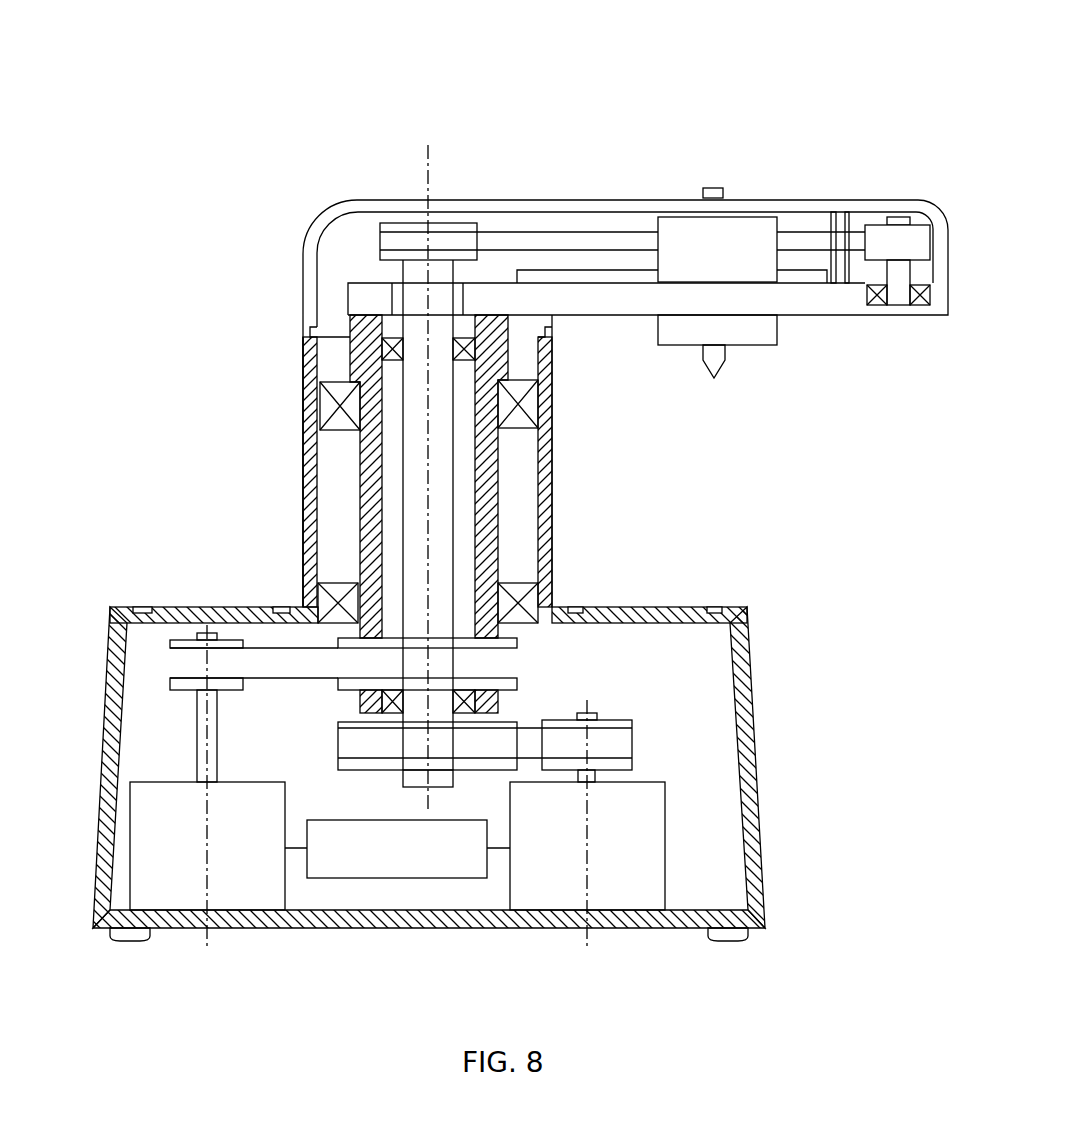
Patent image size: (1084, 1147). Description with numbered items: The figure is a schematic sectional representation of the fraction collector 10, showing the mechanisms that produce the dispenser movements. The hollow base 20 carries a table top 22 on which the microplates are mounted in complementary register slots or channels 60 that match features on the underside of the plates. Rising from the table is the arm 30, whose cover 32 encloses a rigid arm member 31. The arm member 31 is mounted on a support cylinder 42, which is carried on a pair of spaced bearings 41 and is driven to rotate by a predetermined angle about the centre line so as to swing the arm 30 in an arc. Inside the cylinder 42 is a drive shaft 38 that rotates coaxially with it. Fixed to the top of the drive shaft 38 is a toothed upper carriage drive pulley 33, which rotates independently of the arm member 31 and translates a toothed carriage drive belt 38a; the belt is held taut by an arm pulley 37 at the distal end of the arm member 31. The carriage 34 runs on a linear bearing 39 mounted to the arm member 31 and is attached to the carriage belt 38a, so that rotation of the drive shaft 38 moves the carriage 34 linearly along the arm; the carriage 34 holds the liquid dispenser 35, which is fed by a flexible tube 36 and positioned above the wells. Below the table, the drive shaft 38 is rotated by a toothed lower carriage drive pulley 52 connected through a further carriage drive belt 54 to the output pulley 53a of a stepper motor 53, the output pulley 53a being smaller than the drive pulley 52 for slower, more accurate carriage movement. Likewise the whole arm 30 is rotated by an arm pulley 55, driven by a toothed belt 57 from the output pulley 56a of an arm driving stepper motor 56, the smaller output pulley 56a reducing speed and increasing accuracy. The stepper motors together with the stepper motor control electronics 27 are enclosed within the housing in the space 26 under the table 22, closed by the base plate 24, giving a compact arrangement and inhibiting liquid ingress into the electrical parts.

The fraction collector 10 is at (222, 113).
The hollow base 20 is at (102, 767).
The table top 22 is at (195, 607).
The base plate 24 is at (312, 912).
The space 26 is at (700, 660).
The stepper motor control electronics 27 is at (388, 857).
The arm 30 is at (614, 182).
The arm member 31 is at (805, 300).
The cover 32 is at (325, 210).
The upper carriage drive pulley 33 is at (405, 222).
The carriage 34 is at (680, 237).
The liquid dispenser 35 is at (722, 372).
The flexible tube 36 is at (717, 188).
The arm pulley 37 is at (876, 222).
The drive shaft 38 is at (413, 297).
The carriage drive belt 38a is at (487, 237).
The linear bearing 39 is at (557, 272).
The bearings 41 is at (333, 400).
The support cylinder 42 is at (358, 500).
The lower carriage drive pulley 52 is at (485, 768).
The stepper motor 53 is at (642, 838).
The output pulley 53a is at (625, 718).
The carriage drive belt 54 is at (620, 745).
The arm pulley 55 is at (350, 628).
The arm driving stepper motor 56 is at (152, 803).
The output pulley 56a is at (167, 640).
The toothed belt 57 is at (182, 662).
The channels 60 is at (142, 607).